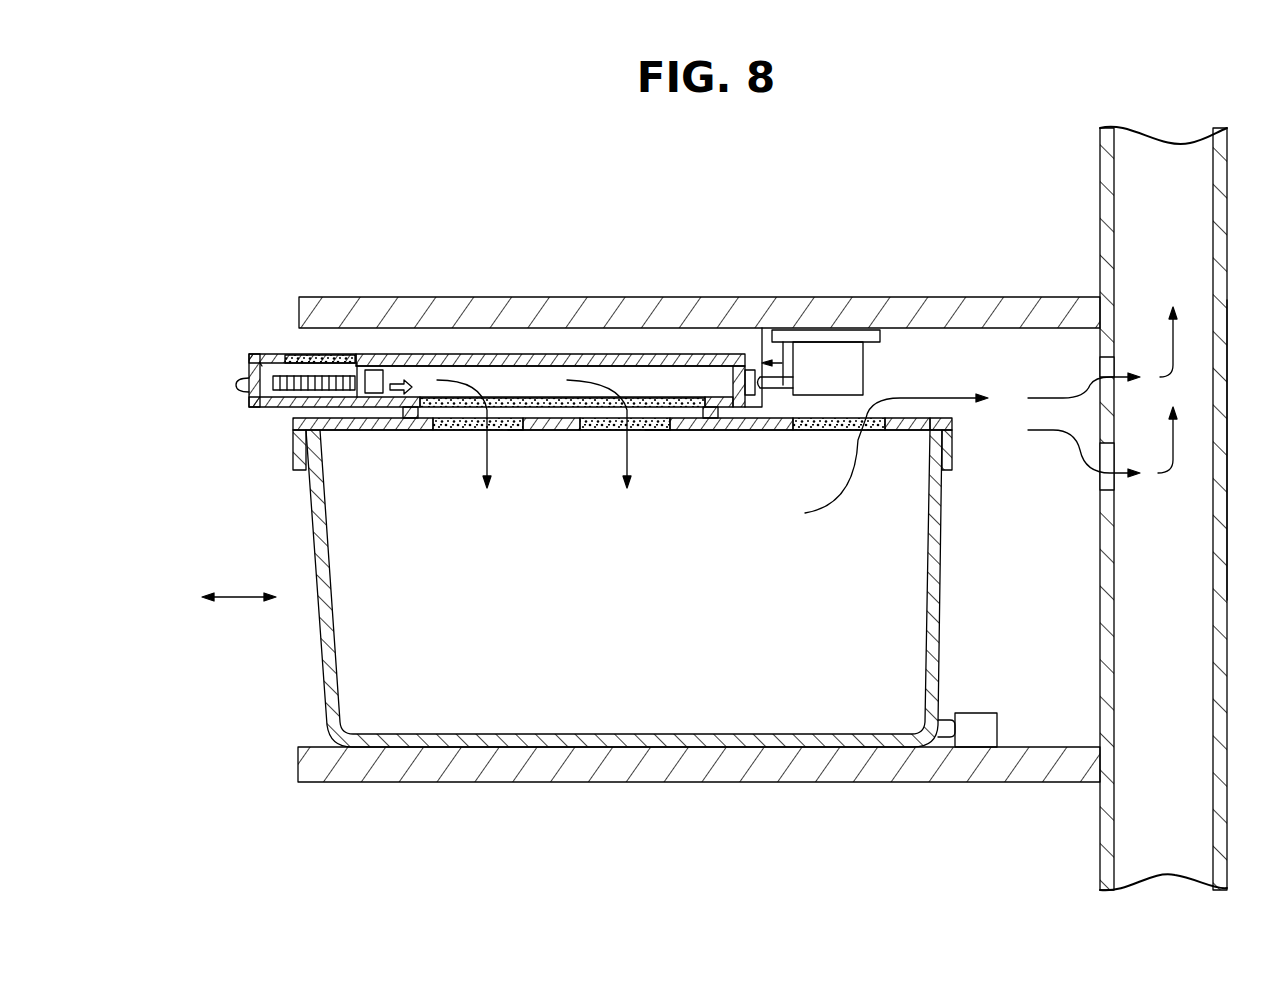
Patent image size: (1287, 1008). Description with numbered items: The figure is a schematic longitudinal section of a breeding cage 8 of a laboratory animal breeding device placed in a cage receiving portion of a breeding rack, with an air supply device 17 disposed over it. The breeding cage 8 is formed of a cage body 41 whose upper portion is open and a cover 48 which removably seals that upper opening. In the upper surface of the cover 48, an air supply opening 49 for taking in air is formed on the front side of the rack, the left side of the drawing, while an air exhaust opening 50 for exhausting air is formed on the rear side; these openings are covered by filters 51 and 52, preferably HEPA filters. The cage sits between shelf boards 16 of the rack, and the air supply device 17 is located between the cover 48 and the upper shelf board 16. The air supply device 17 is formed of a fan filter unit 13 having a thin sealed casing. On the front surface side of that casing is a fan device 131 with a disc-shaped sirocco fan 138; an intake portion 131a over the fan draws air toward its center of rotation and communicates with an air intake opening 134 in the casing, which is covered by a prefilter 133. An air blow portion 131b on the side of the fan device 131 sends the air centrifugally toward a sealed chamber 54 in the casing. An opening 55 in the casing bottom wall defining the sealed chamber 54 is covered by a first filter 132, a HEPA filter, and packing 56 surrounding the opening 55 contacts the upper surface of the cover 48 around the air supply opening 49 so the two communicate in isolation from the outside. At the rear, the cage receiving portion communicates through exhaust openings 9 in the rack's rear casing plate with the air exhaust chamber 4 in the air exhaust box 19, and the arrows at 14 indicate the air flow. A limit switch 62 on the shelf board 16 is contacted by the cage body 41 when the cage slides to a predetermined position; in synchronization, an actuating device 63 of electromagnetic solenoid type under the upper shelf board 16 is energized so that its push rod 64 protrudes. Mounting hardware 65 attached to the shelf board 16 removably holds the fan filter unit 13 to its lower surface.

The air exhaust chamber 4 is at (1192, 222).
The breeding cage 8 is at (298, 532).
The exhaust openings 9 is at (1108, 370).
The fan filter unit 13 is at (487, 340).
The air inlet 14 is at (882, 440).
The shelf board 16 is at (985, 310).
The air supply device 17 is at (622, 340).
The air exhaust box 19 is at (1226, 460).
The cage body 41 is at (323, 672).
The cover 48 is at (297, 452).
The air supply opening 49 is at (438, 432).
The air exhaust opening 50 is at (870, 430).
The filter 51 is at (508, 432).
The filter 52 is at (805, 430).
The sealed chamber 54 is at (668, 385).
The opening 55 is at (428, 372).
The packing 56 is at (710, 432).
The limit switch 62 is at (977, 725).
The actuating device 63 is at (843, 352).
The push rod 64 is at (790, 334).
The mounting hardware 65 is at (742, 347).
The fan device 131 is at (262, 355).
The intake portion 131a is at (258, 358).
The air blow portion 131b is at (410, 362).
The first filter 132 is at (558, 400).
The prefilter 133 is at (330, 358).
The air intake opening 134 is at (340, 376).
The sirocco fan 138 is at (240, 386).